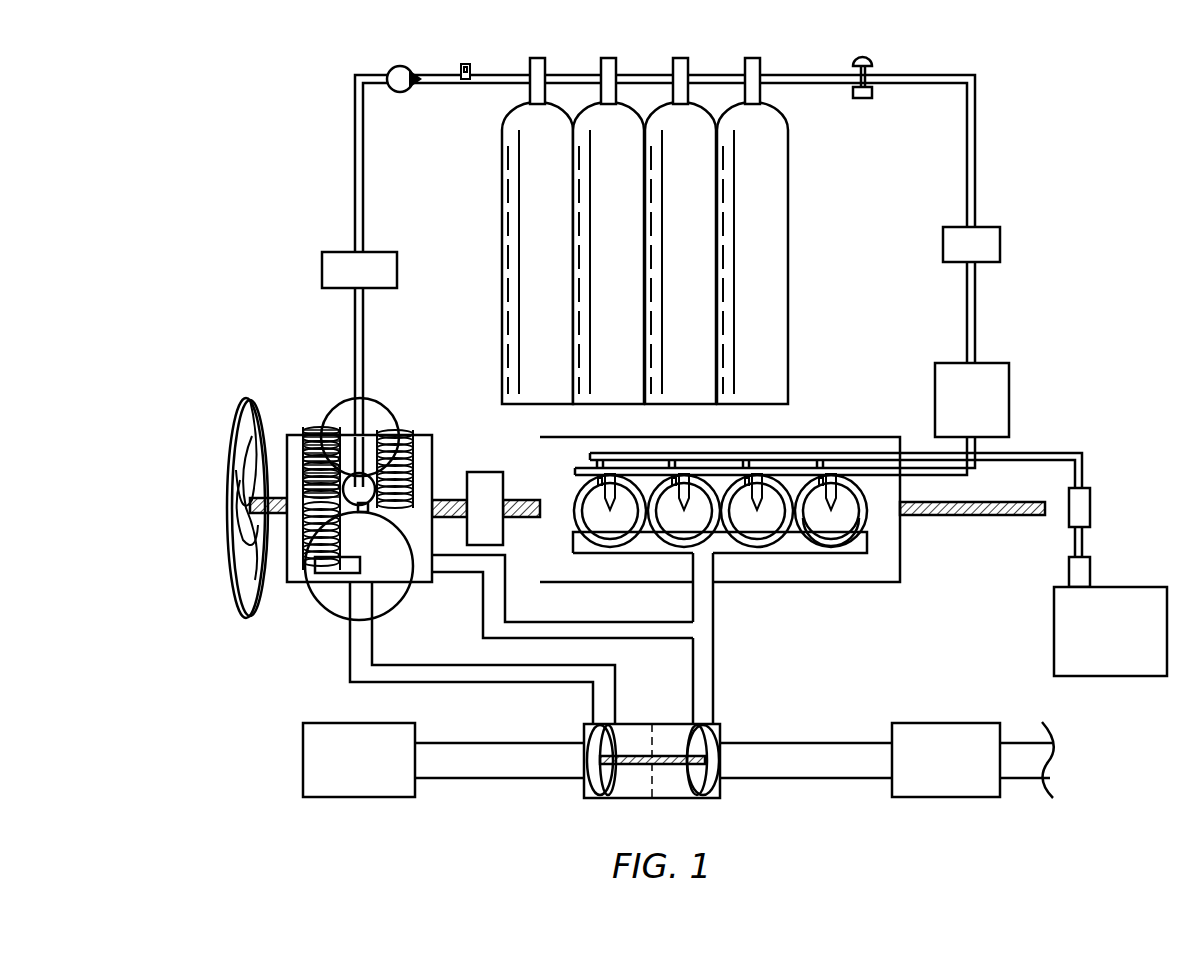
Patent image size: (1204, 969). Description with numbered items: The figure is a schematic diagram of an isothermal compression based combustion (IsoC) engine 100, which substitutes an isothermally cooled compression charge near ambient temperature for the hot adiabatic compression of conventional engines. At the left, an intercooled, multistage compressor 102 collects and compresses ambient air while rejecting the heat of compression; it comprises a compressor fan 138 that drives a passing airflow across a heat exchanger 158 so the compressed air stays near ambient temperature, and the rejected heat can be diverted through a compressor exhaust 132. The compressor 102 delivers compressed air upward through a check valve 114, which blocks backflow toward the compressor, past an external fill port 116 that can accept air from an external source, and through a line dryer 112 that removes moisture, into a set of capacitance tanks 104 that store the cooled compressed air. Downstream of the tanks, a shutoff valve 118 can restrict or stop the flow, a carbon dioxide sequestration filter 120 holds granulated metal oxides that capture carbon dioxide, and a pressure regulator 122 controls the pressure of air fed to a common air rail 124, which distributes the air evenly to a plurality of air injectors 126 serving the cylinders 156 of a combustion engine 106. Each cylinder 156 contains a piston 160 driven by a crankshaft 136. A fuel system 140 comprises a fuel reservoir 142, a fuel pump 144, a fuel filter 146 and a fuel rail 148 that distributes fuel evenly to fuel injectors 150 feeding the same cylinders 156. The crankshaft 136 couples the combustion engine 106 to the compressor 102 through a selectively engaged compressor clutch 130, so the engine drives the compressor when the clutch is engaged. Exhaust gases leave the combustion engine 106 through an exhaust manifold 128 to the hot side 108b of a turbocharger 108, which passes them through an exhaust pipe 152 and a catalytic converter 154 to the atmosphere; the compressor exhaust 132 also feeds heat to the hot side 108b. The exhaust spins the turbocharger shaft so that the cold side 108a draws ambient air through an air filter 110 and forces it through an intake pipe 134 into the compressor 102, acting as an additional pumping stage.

The isothermal compression based combustion (IsoC) engine 100 is at (1038, 90).
The compressor 102 is at (308, 495).
The capacitance tank 104 is at (789, 233).
The combustion engine 106 is at (899, 559).
The turbocharger 108 is at (658, 765).
The cold side 108a is at (673, 735).
The hot side 108b is at (637, 733).
The air filter 110 is at (358, 798).
The line dryer 112 is at (330, 252).
The check valve 114 is at (390, 68).
The external fill port 116 is at (465, 63).
The shutoff valve 118 is at (870, 58).
The carbon dioxide sequestration filter 120 is at (1003, 242).
The pressure regulator 122 is at (1012, 397).
The common air rail 124 is at (850, 468).
The air injectors 126 is at (788, 448).
The exhaust manifold 128 is at (785, 556).
The compressor clutch 130 is at (468, 470).
The compressor exhaust 132 is at (628, 637).
The intake pipe 134 is at (350, 643).
The crankshaft 136 is at (987, 517).
The compressor fan 138 is at (233, 447).
The fuel system 140 is at (1084, 457).
The fuel reservoir 142 is at (1132, 645).
The fuel pump 144 is at (1092, 570).
The fuel filter 146 is at (1092, 507).
The fuel rail 148 is at (638, 453).
The fuel injectors 150 is at (578, 490).
The exhaust pipe 152 is at (800, 780).
The catalytic converter 154 is at (957, 798).
The cylinders 156 is at (865, 520).
The heat exchanger 158 is at (330, 540).
The piston 160 is at (829, 537).